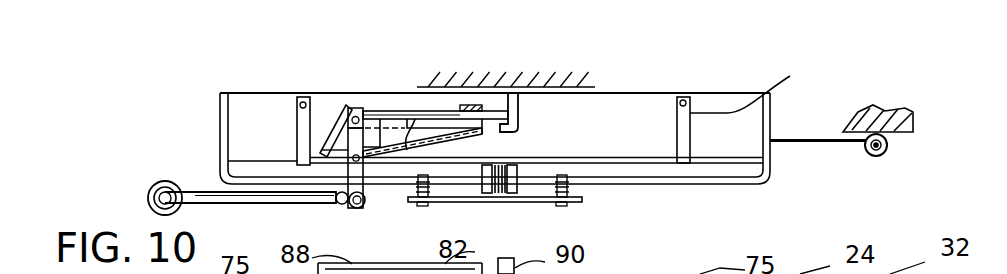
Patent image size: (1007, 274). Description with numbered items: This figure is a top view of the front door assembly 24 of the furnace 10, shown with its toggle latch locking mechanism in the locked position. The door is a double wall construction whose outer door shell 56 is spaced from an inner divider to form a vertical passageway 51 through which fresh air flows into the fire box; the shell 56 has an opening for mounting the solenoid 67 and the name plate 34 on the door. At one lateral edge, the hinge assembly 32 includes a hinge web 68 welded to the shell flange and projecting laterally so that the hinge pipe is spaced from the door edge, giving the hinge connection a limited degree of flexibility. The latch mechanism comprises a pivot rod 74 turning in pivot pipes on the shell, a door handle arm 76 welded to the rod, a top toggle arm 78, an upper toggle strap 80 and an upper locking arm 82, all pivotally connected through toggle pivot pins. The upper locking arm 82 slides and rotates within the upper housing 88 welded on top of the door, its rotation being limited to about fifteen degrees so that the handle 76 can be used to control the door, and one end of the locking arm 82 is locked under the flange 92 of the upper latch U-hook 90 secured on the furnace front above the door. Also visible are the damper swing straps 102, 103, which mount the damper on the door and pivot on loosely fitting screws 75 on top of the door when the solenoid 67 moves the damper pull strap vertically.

The furnace 10 is at (644, 70).
The front door assembly 24 is at (783, 122).
The hinge assembly 32 is at (888, 152).
The name plate 34 is at (547, 202).
The vertical passageway 51 is at (748, 168).
The door shell 56 is at (708, 187).
The solenoid 67 is at (508, 197).
The hinge web 68 is at (803, 147).
The pivot rod 74 is at (358, 208).
The screws 75 is at (297, 98).
The door handle arm 76 is at (200, 208).
The top toggle arm 78 is at (365, 173).
The upper toggle strap 80 is at (340, 137).
The upper locking arm 82 is at (503, 105).
The upper housing 88 is at (348, 108).
The upper latch U-hook 90 is at (520, 114).
The flange 92 is at (518, 128).
The damper swing strap 102 is at (297, 140).
The damper swing strap 103 is at (764, 85).